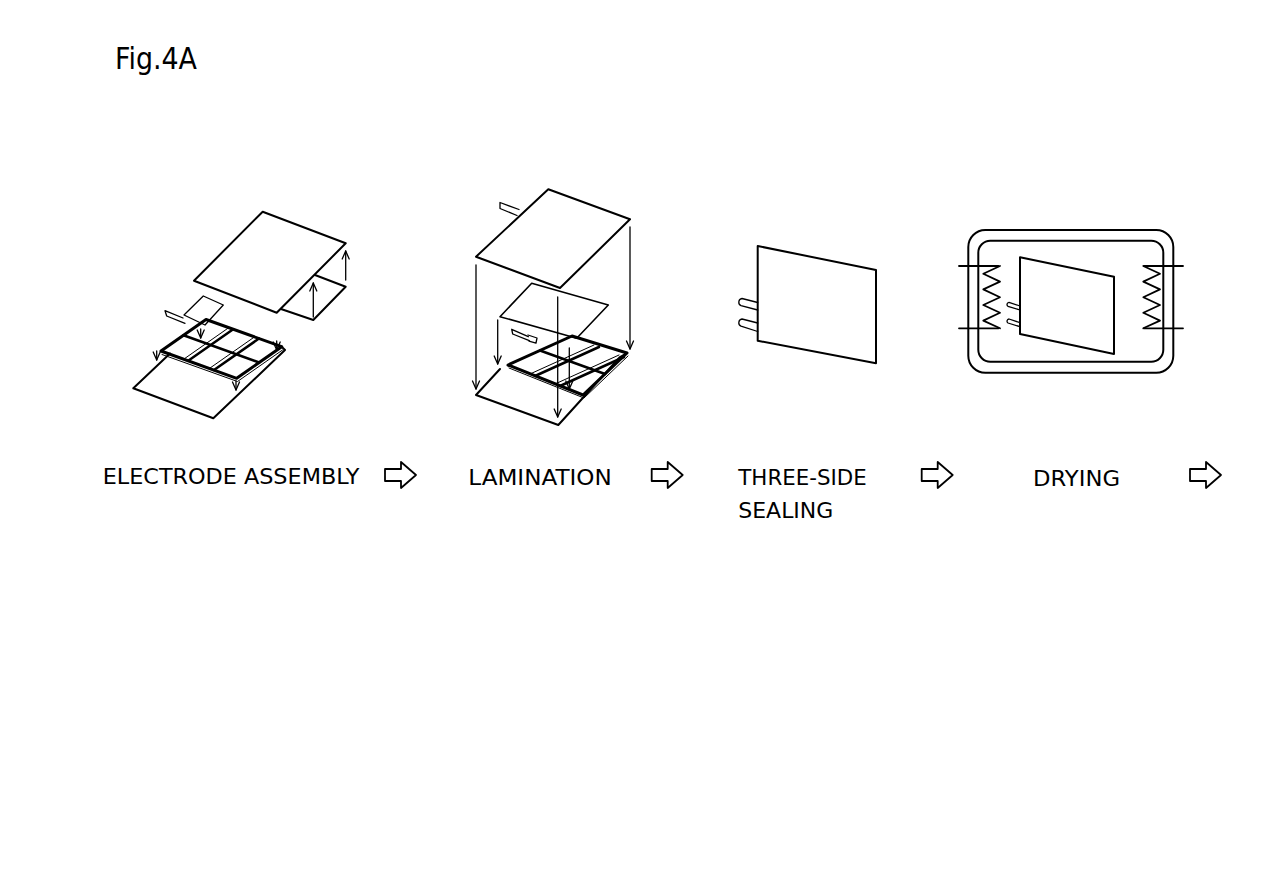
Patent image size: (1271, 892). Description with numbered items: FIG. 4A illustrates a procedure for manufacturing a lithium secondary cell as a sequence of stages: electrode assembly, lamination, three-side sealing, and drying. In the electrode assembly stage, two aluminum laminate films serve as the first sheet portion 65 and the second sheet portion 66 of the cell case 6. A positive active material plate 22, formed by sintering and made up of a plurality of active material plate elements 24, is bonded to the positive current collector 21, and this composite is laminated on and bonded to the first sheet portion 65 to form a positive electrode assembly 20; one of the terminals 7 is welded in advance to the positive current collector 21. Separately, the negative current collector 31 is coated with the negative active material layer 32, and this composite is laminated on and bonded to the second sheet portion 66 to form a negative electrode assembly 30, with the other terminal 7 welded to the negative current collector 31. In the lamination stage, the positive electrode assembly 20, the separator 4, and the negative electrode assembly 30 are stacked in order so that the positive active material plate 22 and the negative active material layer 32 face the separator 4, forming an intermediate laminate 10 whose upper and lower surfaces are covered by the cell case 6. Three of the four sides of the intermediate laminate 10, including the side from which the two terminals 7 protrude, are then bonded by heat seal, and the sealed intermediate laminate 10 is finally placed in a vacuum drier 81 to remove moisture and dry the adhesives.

The separator 4 is at (586, 306).
The cell case 6 is at (330, 160).
The terminals 7 is at (166, 313).
The intermediate laminate 10 is at (828, 282).
The positive electrode assembly 20 is at (487, 414).
The positive current collector 21 is at (247, 377).
The positive active material plate 22 is at (143, 256).
The active material plate elements 24 is at (203, 311).
The negative electrode assembly 30 is at (569, 177).
The negative current collector 31 is at (327, 293).
The negative active material layer 32 is at (323, 325).
The first sheet portion 65 is at (210, 405).
The second sheet portion 66 is at (307, 238).
The vacuum drier 81 is at (1007, 235).